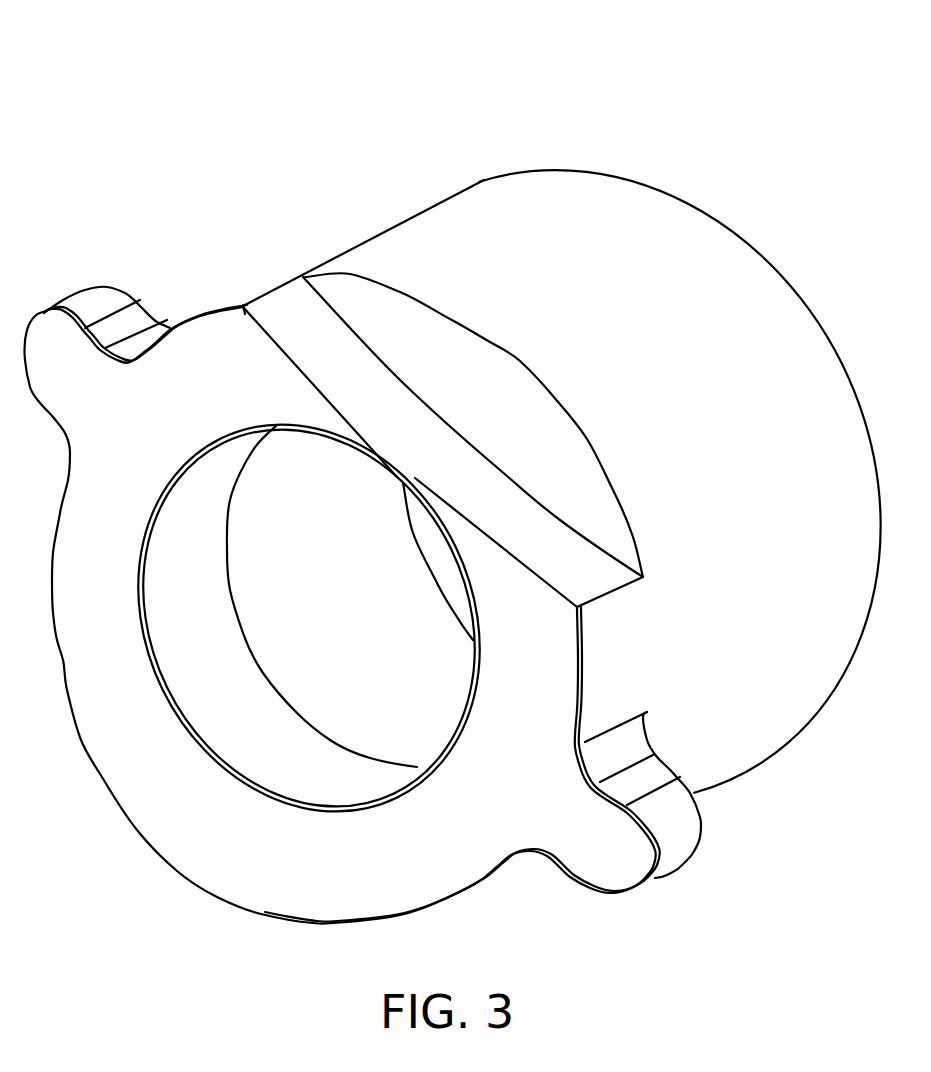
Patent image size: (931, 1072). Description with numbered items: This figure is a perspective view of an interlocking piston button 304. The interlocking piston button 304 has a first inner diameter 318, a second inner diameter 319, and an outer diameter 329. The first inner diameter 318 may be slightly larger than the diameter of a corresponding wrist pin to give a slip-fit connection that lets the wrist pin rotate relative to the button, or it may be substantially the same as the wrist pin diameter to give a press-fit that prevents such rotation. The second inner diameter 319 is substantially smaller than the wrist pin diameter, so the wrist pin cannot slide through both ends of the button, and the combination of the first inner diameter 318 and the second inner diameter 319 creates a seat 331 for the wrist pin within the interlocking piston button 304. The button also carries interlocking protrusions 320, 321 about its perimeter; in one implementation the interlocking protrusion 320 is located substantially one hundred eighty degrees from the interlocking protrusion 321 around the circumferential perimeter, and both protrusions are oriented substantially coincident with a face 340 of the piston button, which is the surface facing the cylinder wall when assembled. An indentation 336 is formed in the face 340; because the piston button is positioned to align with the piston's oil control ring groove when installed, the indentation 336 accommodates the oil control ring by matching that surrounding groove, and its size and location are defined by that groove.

The interlocking piston button 304 is at (706, 117).
The outer diameter 329 is at (754, 471).
The indentation 336 is at (519, 414).
The face 340 is at (284, 872).
The interlocking protrusion 320 is at (86, 374).
The interlocking protrusion 321 is at (622, 862).
The second inner diameter 319 is at (235, 687).
The first inner diameter 318 is at (375, 621).
The seat 331 is at (262, 590).